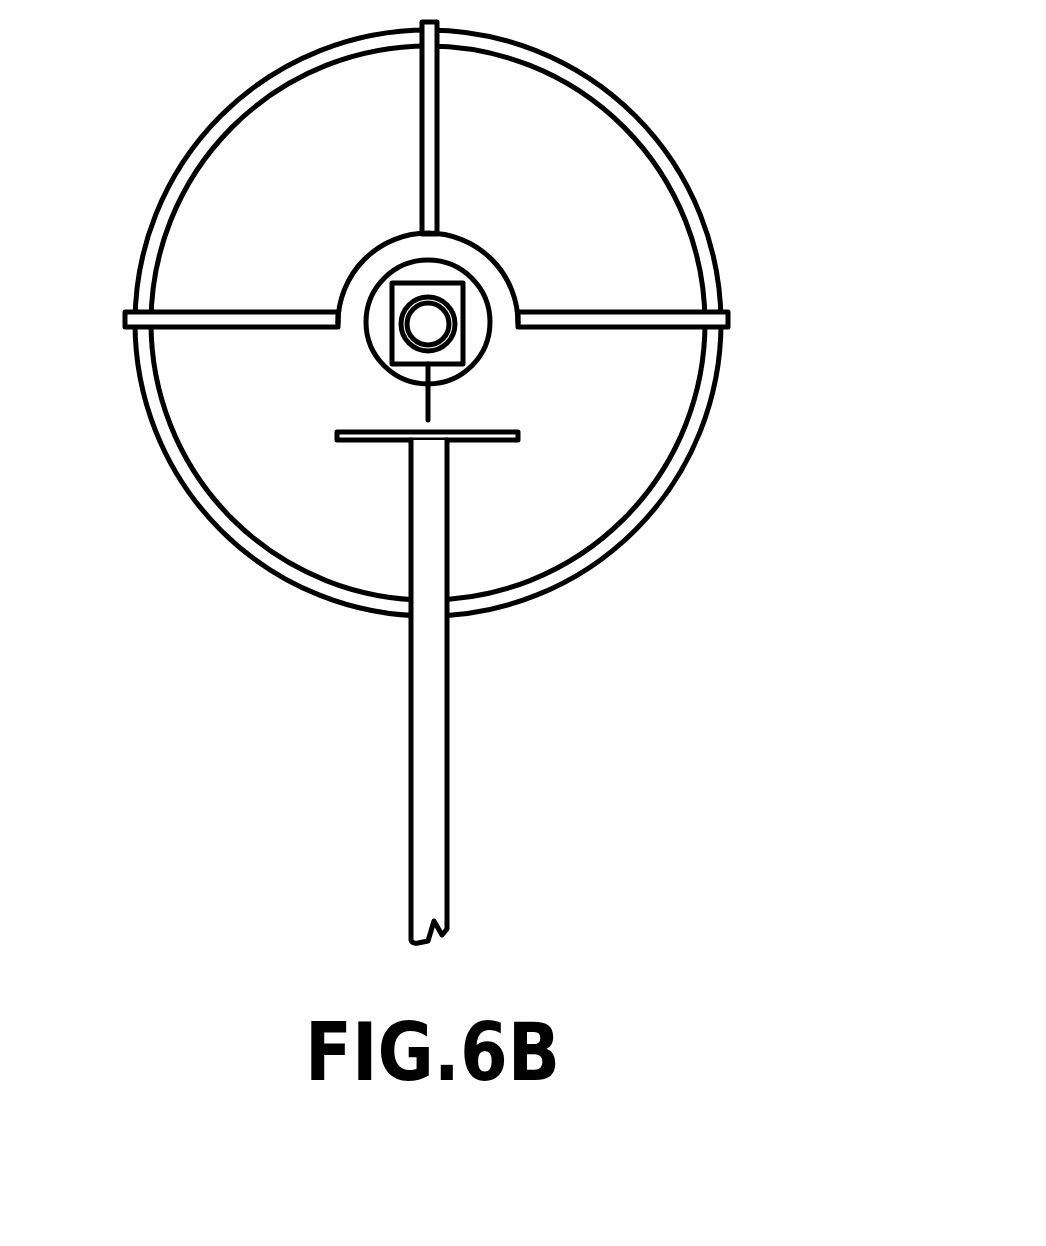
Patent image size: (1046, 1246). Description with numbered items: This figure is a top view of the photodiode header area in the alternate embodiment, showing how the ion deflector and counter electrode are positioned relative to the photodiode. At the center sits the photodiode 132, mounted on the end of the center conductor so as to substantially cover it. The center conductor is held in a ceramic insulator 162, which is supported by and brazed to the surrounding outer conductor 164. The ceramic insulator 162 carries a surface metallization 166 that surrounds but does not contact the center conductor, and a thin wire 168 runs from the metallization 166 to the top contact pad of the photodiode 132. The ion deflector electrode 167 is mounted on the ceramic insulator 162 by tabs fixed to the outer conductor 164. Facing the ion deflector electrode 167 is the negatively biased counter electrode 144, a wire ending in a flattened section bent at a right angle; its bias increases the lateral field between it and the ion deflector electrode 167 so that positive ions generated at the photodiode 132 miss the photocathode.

The ceramic insulator 162 is at (263, 142).
The outer conductor 164 is at (628, 110).
The surface metallization 166 is at (632, 515).
The ion deflector electrode 167 is at (500, 257).
The photodiode 132 is at (440, 326).
The thin wire 168 is at (428, 397).
The counter electrode 144 is at (428, 735).